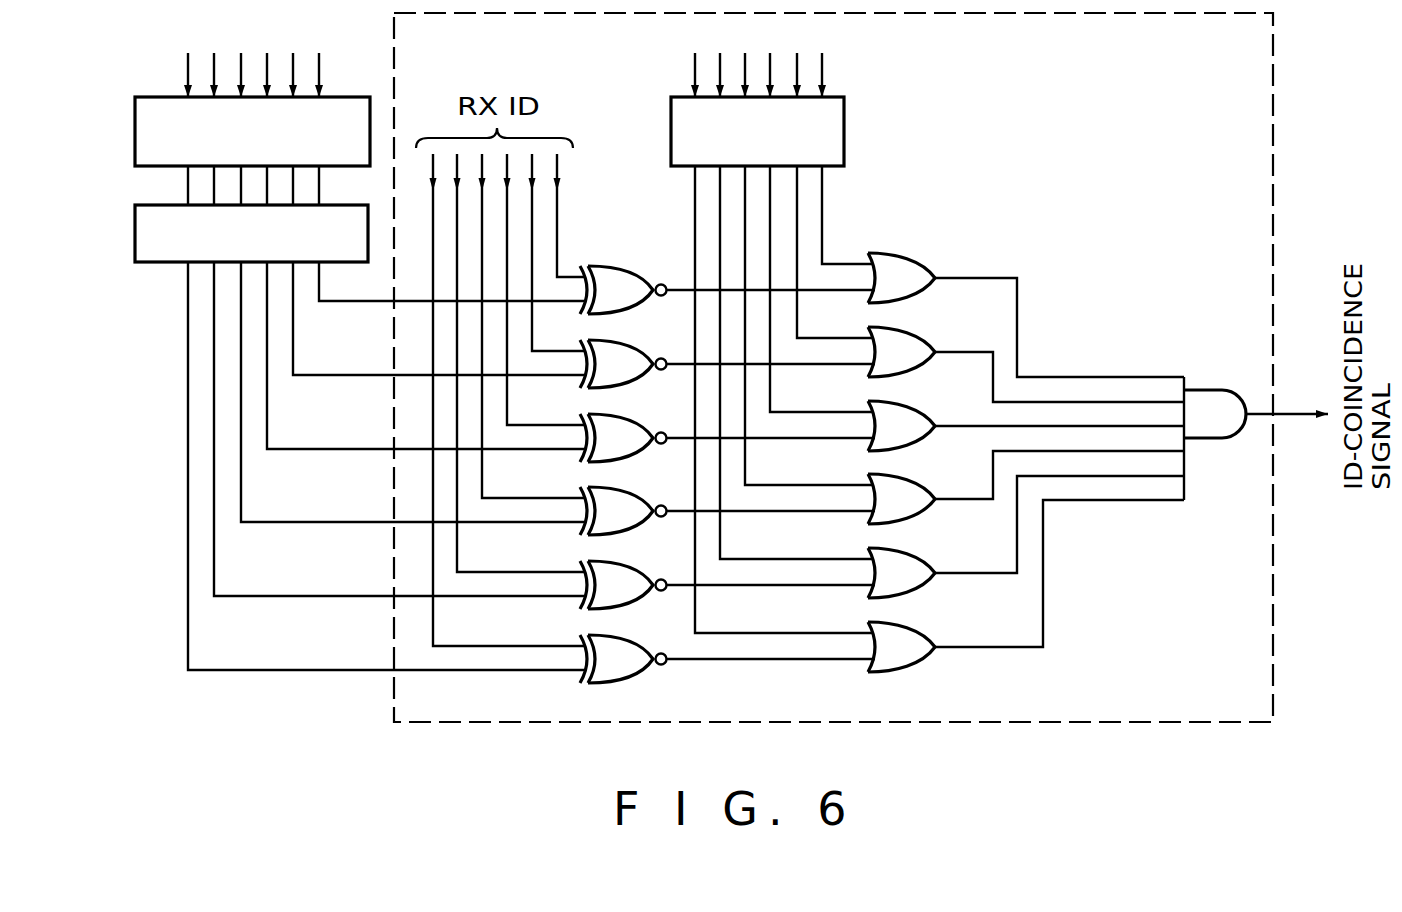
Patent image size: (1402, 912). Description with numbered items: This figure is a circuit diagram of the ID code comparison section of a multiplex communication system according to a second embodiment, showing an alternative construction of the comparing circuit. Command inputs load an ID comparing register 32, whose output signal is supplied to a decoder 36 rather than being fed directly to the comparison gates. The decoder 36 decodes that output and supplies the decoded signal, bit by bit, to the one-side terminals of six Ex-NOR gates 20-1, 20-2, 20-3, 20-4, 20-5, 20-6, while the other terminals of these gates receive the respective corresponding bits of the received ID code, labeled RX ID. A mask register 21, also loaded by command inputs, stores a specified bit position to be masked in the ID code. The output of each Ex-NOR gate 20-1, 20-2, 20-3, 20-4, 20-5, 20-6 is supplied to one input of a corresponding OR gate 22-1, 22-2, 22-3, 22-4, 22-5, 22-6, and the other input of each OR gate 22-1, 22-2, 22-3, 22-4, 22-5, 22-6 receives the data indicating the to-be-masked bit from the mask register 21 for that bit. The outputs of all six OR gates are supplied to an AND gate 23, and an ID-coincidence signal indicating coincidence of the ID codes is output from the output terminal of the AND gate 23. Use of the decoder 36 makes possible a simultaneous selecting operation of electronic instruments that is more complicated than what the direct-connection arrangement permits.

The ID comparing register 32 is at (346, 97).
The decoder 36 is at (330, 205).
The mask register 21 is at (846, 125).
The Ex-NOR gate 20-1 is at (614, 268).
The Ex-NOR gate 20-2 is at (610, 342).
The Ex-NOR gate 20-3 is at (610, 416).
The Ex-NOR gate 20-4 is at (610, 489).
The Ex-NOR gate 20-5 is at (610, 563).
The Ex-NOR gate 20-6 is at (610, 639).
The OR gate 22-1 is at (893, 253).
The OR gate 22-2 is at (904, 332).
The OR gate 22-3 is at (904, 405).
The OR gate 22-4 is at (896, 477).
The OR gate 22-5 is at (904, 552).
The OR gate 22-6 is at (905, 630).
The AND gate 23 is at (1204, 390).